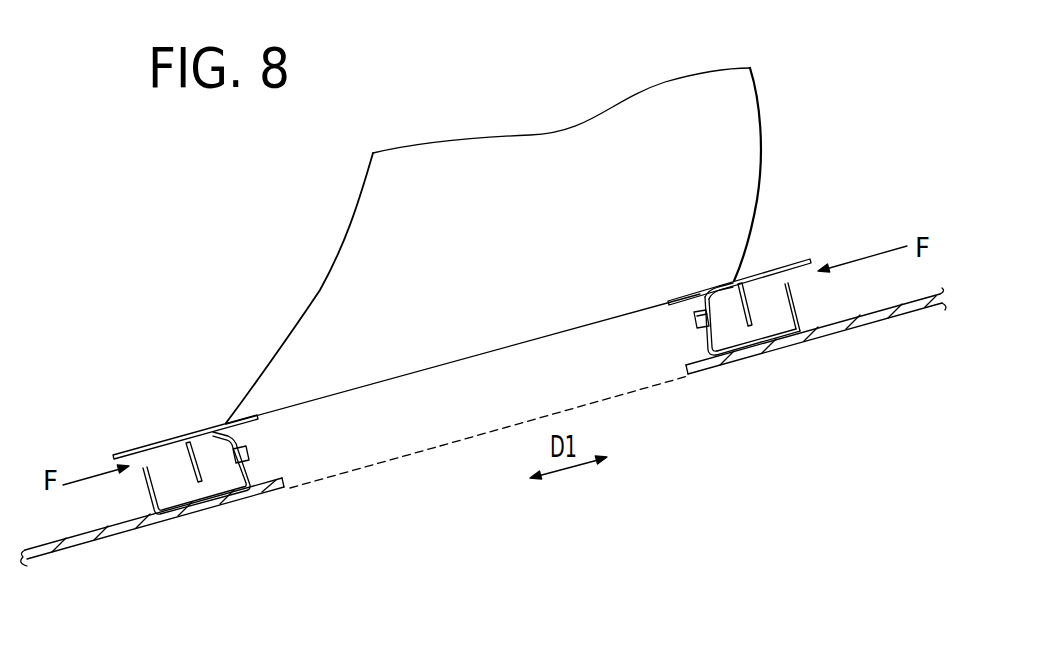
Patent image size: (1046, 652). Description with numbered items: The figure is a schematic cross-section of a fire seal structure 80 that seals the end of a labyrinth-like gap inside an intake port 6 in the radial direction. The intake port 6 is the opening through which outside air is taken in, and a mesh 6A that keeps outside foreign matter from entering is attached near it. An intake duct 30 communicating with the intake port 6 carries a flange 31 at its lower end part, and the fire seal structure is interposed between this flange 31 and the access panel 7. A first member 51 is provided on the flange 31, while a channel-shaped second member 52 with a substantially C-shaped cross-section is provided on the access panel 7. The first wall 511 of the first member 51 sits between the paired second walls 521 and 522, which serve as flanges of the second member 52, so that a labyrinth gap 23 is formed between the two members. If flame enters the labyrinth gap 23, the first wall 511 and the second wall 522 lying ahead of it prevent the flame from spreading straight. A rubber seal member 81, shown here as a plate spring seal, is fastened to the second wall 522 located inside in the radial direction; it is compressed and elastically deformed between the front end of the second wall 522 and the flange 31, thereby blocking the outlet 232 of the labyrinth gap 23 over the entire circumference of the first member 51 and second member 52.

The intake duct 30 is at (758, 102).
The flange 31 is at (760, 284).
The first member 51 is at (755, 282).
The first wall 511 is at (752, 298).
The second member 52 is at (742, 321).
The second wall 521 is at (837, 355).
The second wall 522 is at (700, 340).
The labyrinth gap 23 is at (774, 320).
The outlet of labyrinth gap 232 is at (700, 278).
The fire seal structure 80 is at (680, 322).
The seal member 81 is at (694, 313).
The access panel 7 is at (856, 316).
The intake port 6 is at (338, 484).
The mesh 6A is at (477, 436).